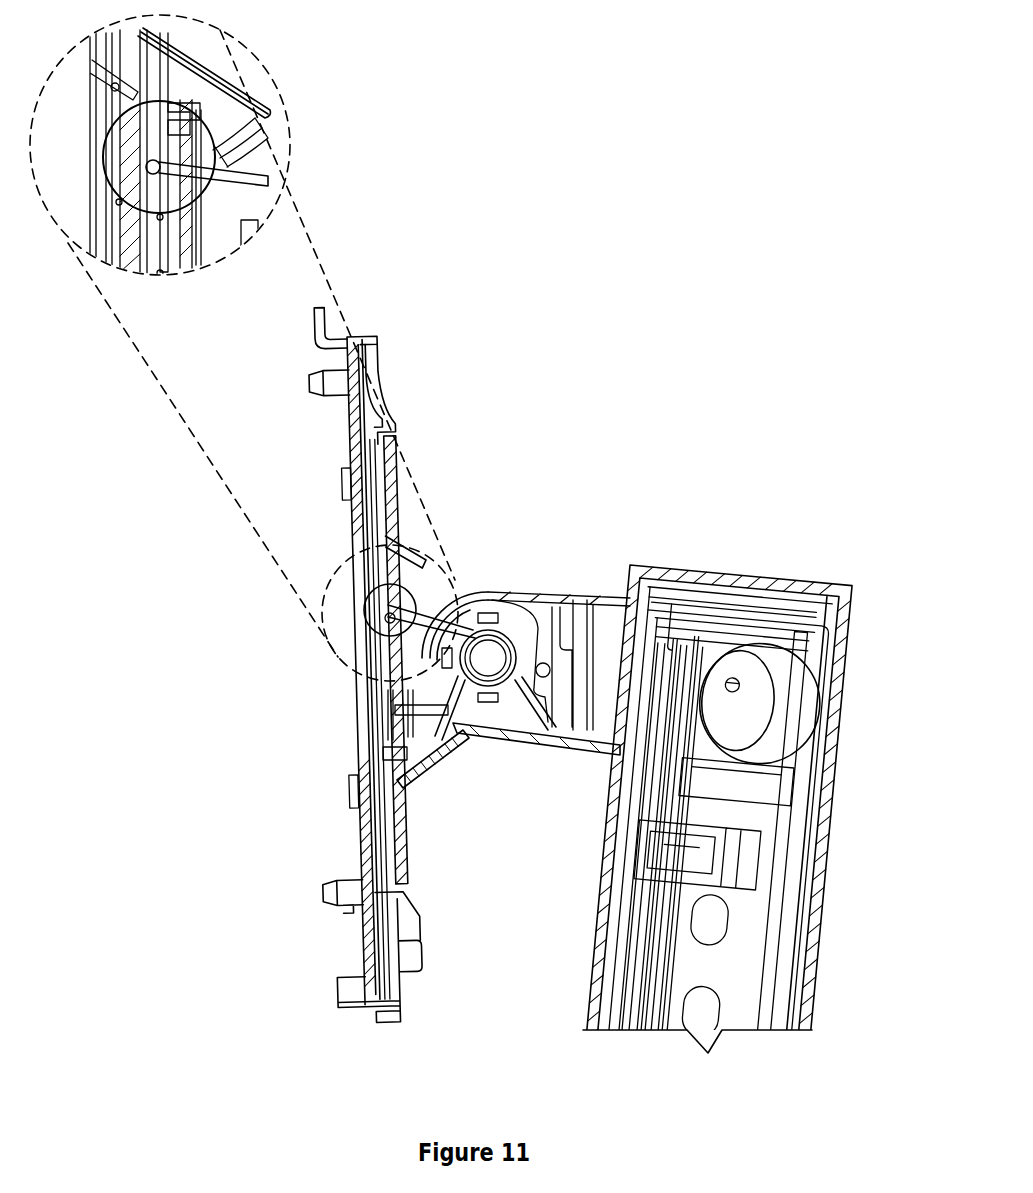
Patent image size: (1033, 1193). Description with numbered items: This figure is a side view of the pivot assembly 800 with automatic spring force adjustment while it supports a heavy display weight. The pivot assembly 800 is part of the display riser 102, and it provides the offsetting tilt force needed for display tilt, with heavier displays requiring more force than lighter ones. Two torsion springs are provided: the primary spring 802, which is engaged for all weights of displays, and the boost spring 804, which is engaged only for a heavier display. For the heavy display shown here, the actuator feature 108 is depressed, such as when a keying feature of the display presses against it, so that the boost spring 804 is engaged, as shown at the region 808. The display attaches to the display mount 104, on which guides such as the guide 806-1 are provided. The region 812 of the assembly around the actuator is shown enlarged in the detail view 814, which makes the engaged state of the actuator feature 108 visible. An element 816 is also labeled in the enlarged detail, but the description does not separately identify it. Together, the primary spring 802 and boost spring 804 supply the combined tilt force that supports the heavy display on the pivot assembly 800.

The pivot assembly 800 is at (671, 292).
The primary spring 802 is at (450, 748).
The boost spring 804 is at (484, 622).
The guide 806-1 is at (304, 384).
The boost spring engagement region 808 is at (438, 560).
The enlarged region 812 is at (368, 247).
The enlarged view 814 is at (446, 571).
The latch member 816 is at (231, 54).
The display mount 104 is at (378, 337).
The actuator feature 108 is at (112, 192).
The display riser 102 is at (849, 692).